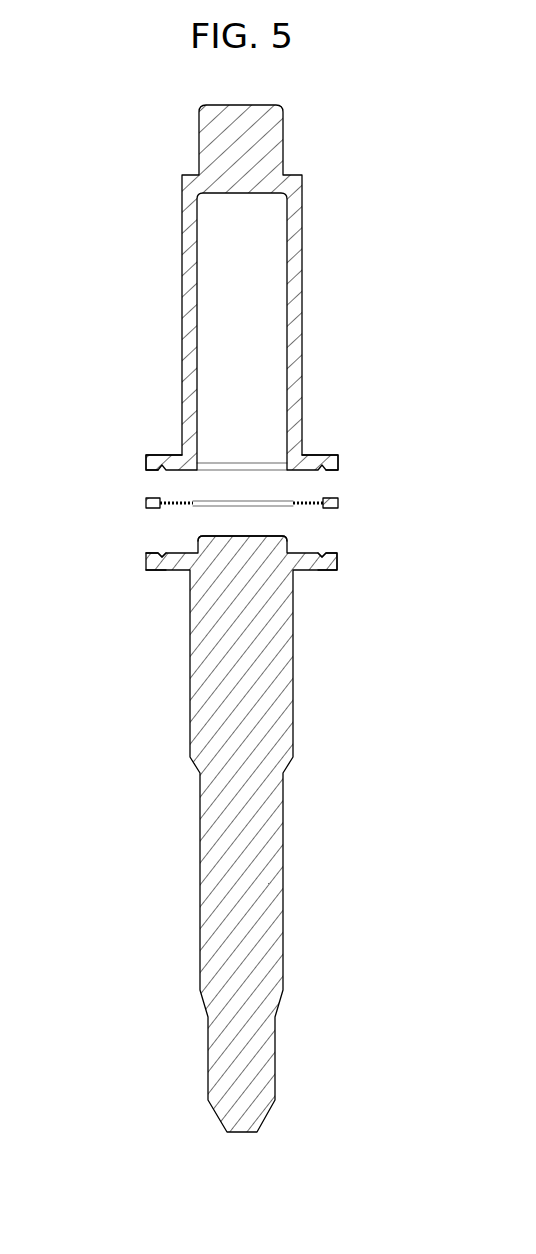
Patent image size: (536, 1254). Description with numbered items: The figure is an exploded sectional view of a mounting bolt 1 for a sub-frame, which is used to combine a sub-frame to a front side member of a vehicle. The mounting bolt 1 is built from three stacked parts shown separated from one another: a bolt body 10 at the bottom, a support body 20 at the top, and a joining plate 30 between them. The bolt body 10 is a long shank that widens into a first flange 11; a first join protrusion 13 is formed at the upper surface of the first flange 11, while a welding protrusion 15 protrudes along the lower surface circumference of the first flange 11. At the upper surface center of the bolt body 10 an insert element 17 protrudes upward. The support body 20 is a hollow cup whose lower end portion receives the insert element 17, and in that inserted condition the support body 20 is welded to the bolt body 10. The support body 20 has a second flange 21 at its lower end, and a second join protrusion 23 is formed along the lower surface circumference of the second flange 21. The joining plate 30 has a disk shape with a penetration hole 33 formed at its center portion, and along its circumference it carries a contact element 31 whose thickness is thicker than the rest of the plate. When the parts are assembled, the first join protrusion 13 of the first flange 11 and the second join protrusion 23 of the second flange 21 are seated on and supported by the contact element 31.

The mounting bolt 1 is at (123, 100).
The bolt body 10 is at (156, 787).
The first flange 11 is at (308, 560).
The first join protrusion 13 is at (160, 553).
The welding protrusion 15 is at (153, 572).
The insert element 17 is at (250, 537).
The support body 20 is at (156, 287).
The second flange 21 is at (336, 455).
The second join protrusion 23 is at (152, 471).
The joining plate 30 is at (228, 488).
The contact element 31 is at (338, 503).
The penetration hole 33 is at (295, 503).